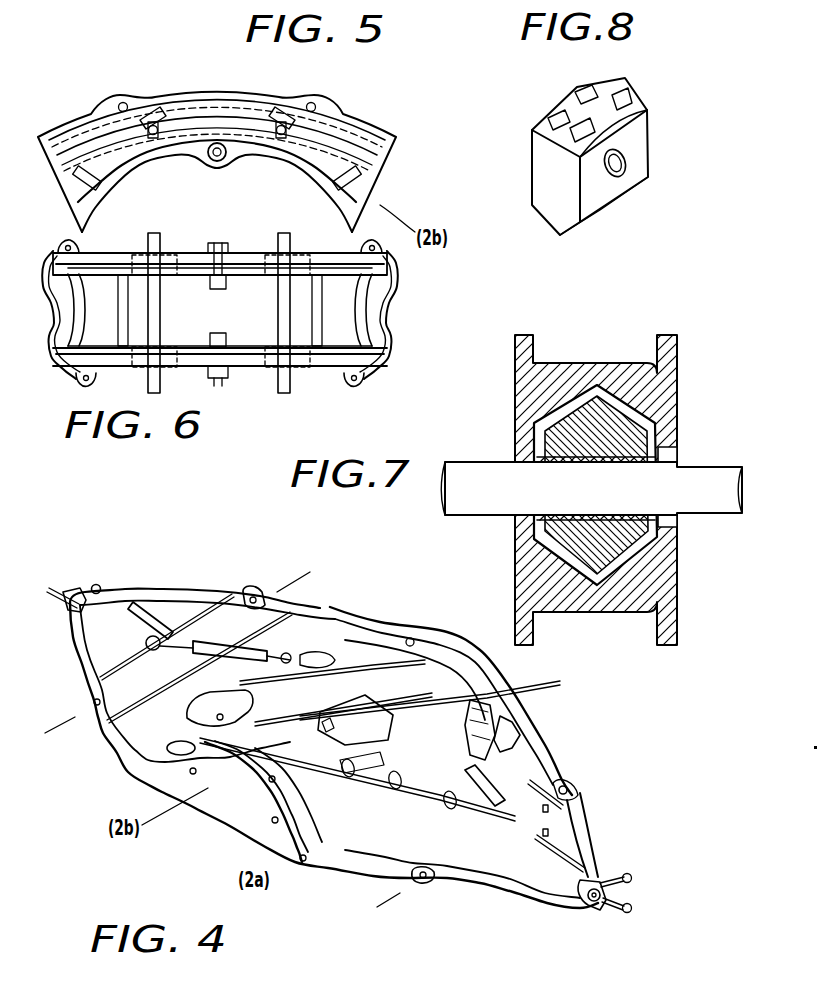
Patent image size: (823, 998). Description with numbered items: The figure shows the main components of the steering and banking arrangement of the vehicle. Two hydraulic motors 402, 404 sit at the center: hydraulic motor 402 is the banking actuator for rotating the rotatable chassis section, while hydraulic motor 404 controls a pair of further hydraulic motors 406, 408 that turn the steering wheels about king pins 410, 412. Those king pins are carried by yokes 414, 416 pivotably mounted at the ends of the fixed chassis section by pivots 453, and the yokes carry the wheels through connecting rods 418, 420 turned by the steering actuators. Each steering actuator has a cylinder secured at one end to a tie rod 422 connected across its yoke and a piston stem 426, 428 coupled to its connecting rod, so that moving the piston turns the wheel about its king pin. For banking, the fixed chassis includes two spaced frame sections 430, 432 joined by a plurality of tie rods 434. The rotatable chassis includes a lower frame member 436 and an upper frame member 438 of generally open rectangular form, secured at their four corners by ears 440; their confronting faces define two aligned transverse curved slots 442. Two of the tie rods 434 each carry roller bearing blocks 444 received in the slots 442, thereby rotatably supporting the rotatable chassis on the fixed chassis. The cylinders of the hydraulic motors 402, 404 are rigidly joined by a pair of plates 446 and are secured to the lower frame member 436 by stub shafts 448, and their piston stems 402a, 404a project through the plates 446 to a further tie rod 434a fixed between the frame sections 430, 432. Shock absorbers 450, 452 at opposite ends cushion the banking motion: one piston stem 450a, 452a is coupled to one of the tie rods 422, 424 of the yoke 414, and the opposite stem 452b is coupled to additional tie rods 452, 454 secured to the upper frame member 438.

In FIG. 4, the hydraulic motor 402 is at (355, 720).
In FIG. 4, the piston stem 402a is at (298, 655).
In FIG. 4, the hydraulic motor 404 is at (333, 724).
In FIG. 4, the piston stem 404a is at (372, 767).
In FIG. 4, the hydraulic motor 406 is at (572, 850).
In FIG. 4, the hydraulic motor 408 is at (146, 641).
In FIG. 4, the king pin 410 is at (590, 913).
In FIG. 4, the king pin 412 is at (75, 590).
In FIG. 4, the yoke 414 is at (590, 840).
In FIG. 4, the yoke 416 is at (167, 590).
In FIG. 4, the connecting rod 418 is at (617, 913).
In FIG. 4, the connecting rod 420 is at (57, 602).
In FIG. 4, the tie rod 422 is at (99, 587).
In FIG. 4, the tie rod 424 is at (203, 598).
In FIG. 4, the piston stem 426 is at (614, 870).
In FIG. 4, the piston stem 428 is at (130, 609).
In FIG. 4, the frame section 430 is at (446, 650).
In FIG. 4, the frame section 432 is at (205, 790).
In FIG. 5, the tie rod 434 is at (150, 140).
In FIG. 6, the tie rod 434 is at (281, 233).
In FIG. 7, the tie rod 434 is at (477, 468).
In FIG. 4, the tie rod 434 is at (408, 640).
In FIG. 4, the tie rod 434a is at (515, 744).
In FIG. 5, the lower frame member 436 is at (80, 203).
In FIG. 6, the lower frame member 436 is at (358, 334).
In FIG. 7, the lower frame member 436 is at (625, 600).
In FIG. 4, the lower frame member 436 is at (274, 830).
In FIG. 5, the upper frame member 438 is at (62, 157).
In FIG. 6, the upper frame member 438 is at (388, 280).
In FIG. 7, the upper frame member 438 is at (566, 382).
In FIG. 4, the upper frame member 438 is at (457, 673).
In FIG. 5, the ear 440 is at (362, 180).
In FIG. 6, the ear 440 is at (363, 373).
In FIG. 4, the ear 440 is at (170, 744).
In FIG. 5, the curved slot 442 is at (226, 117).
In FIG. 6, the curved slot 442 is at (220, 311).
In FIG. 5, the roller bearing block 444 is at (160, 108).
In FIG. 8, the roller bearing block 444 is at (553, 200).
In FIG. 7, the roller bearing block 444 is at (637, 417).
In FIG. 4, the roller bearing block 444 is at (470, 682).
In FIG. 4, the plate 446 is at (425, 709).
In FIG. 5, the stub shaft 448 is at (217, 162).
In FIG. 6, the stub shaft 448 is at (214, 334).
In FIG. 4, the stub shaft 448 is at (233, 817).
In FIG. 4, the shock absorber 450 is at (498, 796).
In FIG. 4, the piston stem 450a is at (513, 820).
In FIG. 5, the shock absorber 452 is at (314, 101).
In FIG. 6, the shock absorber 452 is at (323, 334).
In FIG. 4, the shock absorber 452 is at (212, 646).
In FIG. 4, the piston stem 452a is at (170, 651).
In FIG. 4, the piston stem 452b is at (283, 652).
In FIG. 4, the pivot 453 is at (257, 591).
In FIG. 5, the tie rod 454 is at (118, 101).
In FIG. 6, the tie rod 454 is at (174, 338).
In FIG. 4, the tie rod 454 is at (214, 695).